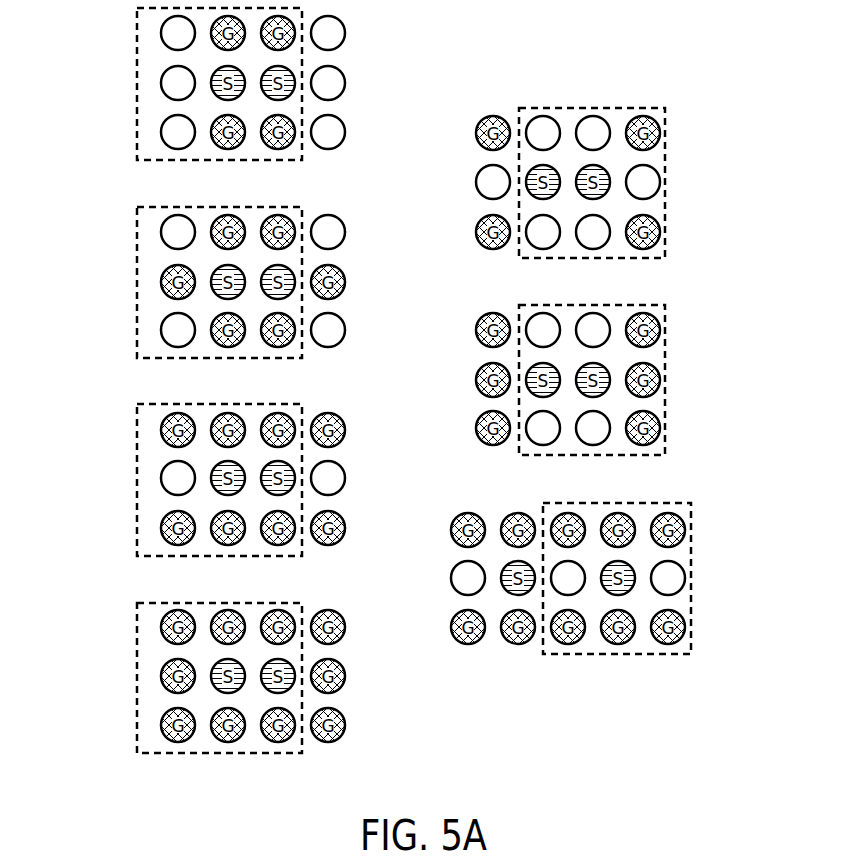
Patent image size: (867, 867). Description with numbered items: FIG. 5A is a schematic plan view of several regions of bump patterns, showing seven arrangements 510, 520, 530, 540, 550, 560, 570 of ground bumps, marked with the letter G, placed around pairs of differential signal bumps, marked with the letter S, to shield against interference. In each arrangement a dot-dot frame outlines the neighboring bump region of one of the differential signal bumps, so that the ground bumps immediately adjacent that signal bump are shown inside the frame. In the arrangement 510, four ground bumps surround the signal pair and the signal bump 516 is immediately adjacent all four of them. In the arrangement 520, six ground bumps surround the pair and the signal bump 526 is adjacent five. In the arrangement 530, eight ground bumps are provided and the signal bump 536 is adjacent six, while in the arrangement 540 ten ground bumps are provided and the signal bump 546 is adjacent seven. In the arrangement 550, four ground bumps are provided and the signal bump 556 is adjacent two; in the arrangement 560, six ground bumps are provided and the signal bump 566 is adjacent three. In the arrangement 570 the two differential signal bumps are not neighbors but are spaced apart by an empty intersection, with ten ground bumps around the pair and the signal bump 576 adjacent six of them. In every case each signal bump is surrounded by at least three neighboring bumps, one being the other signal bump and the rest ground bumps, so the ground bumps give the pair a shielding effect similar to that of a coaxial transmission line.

The arrangement 510 is at (196, 84).
The differential signal bump 516 is at (214, 93).
The arrangement 520 is at (196, 282).
The differential signal bump 526 is at (214, 292).
The arrangement 530 is at (196, 480).
The differential signal bump 536 is at (214, 488).
The arrangement 540 is at (196, 678).
The differential signal bump 546 is at (214, 686).
The arrangement 550 is at (624, 183).
The differential signal bump 556 is at (607, 192).
The arrangement 560 is at (625, 380).
The differential signal bump 566 is at (607, 390).
The arrangement 570 is at (625, 578).
The differential signal bump 576 is at (632, 588).